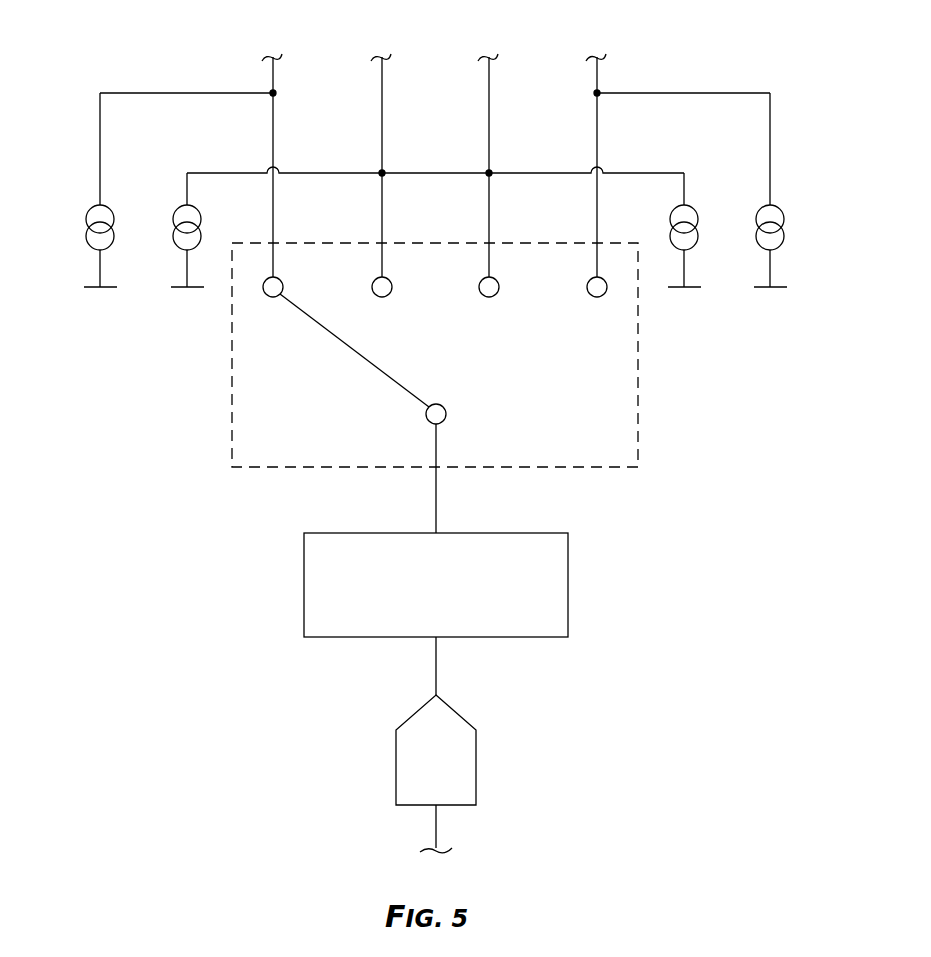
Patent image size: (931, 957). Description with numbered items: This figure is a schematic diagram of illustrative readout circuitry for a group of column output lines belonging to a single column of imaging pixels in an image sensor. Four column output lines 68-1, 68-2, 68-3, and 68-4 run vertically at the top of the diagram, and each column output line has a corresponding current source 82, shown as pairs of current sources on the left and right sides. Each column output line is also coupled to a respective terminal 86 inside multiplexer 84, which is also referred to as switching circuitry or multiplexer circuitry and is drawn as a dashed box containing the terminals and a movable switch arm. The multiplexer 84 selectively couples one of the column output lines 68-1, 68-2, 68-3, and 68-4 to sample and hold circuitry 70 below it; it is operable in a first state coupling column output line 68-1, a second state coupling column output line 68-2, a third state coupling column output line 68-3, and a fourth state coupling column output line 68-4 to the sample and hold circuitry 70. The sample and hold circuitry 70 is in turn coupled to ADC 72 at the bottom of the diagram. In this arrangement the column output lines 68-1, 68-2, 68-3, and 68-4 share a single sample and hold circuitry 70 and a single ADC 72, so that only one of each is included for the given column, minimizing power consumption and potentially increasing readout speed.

The column output line 68-1 is at (272, 70).
The column output line 68-2 is at (381, 70).
The column output line 68-3 is at (488, 70).
The column output line 68-4 is at (596, 70).
The current source 82 is at (125, 243).
The terminal 86 is at (265, 296).
The multiplexer 84 is at (640, 441).
The sample and hold circuitry 70 is at (503, 638).
The ADC 72 is at (476, 762).